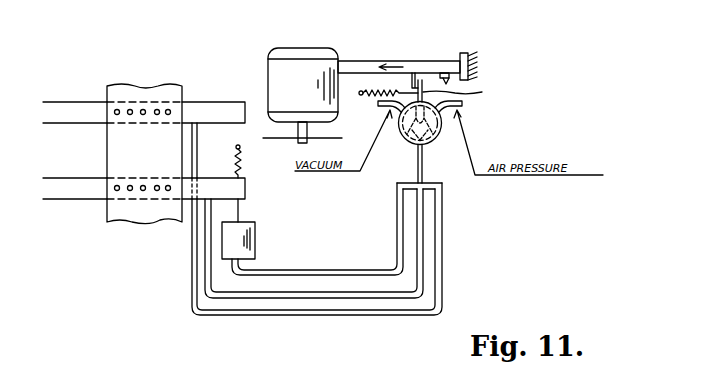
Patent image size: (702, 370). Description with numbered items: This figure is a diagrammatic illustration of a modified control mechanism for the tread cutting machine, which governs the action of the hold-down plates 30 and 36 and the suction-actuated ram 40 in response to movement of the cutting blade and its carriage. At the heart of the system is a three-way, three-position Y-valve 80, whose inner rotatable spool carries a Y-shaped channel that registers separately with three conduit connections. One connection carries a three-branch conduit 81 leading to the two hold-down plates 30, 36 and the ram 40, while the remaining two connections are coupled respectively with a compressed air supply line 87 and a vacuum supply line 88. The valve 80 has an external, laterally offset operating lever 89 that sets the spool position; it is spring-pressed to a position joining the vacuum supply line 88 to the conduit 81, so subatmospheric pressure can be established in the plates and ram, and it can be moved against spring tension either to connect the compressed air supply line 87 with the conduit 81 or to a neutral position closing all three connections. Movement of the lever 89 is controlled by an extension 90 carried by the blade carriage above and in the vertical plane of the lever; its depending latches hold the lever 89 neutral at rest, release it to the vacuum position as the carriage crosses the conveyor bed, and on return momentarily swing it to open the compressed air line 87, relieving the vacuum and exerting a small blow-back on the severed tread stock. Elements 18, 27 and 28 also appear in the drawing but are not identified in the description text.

The perforated plate 18 is at (108, 148).
The vacuum tank 27 is at (270, 70).
The tank outlet support 28 is at (280, 138).
The hold-down plate 30 is at (77, 102).
The hold-down plate 36 is at (72, 199).
The suction-actuated ram 40 is at (250, 238).
The Y-valve 80 is at (431, 143).
The three-branch conduit 81 is at (417, 173).
The compressed air supply line 87 is at (463, 107).
The vacuum supply line 88 is at (378, 108).
The operating lever 89 is at (464, 95).
The extension 90 is at (421, 61).